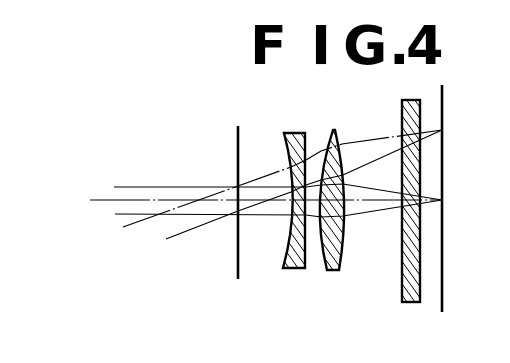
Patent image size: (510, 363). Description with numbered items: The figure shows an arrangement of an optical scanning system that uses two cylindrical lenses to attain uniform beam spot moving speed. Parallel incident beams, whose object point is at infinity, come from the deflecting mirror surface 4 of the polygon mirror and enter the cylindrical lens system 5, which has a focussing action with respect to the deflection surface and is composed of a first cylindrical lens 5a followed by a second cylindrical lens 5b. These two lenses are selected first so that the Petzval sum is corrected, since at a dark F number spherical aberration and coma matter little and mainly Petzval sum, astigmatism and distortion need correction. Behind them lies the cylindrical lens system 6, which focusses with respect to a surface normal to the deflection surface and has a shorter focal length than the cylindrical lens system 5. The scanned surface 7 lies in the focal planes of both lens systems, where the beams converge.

The deflecting mirror surface 4 is at (238, 275).
The cylindrical lens system 5 is at (312, 243).
The first cylindrical lens 5a is at (289, 268).
The second cylindrical lens 5b is at (268, 316).
The cylindrical lens system 6 is at (407, 302).
The scanned surface 7 is at (443, 298).